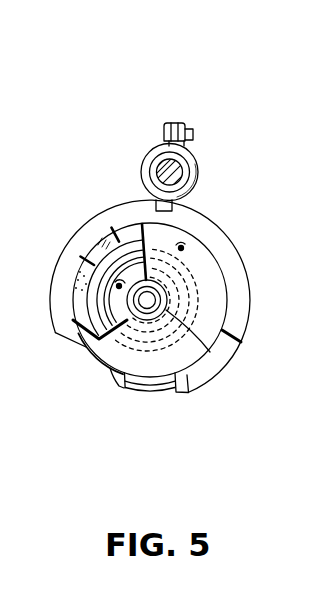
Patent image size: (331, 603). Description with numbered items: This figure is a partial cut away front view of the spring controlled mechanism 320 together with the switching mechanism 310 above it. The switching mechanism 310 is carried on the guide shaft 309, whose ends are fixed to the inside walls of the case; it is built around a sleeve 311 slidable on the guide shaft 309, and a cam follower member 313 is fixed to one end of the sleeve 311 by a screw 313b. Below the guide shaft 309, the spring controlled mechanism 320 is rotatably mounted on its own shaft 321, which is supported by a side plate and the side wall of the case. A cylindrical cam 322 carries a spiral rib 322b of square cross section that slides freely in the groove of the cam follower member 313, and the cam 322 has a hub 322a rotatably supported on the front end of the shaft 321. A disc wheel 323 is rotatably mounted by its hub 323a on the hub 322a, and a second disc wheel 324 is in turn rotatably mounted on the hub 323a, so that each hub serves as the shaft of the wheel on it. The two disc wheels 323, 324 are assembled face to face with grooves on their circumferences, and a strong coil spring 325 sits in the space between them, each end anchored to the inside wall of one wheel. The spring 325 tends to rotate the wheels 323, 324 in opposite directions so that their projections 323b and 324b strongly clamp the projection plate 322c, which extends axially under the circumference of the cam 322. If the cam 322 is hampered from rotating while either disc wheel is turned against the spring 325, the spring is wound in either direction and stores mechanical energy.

The guide shaft 309 is at (183, 177).
The switching mechanism 310 is at (151, 118).
The sleeve 311 is at (158, 160).
The cam follower member 313 is at (197, 162).
The screw 313b is at (184, 126).
The spring controlled mechanism 320 is at (89, 378).
The shaft 321 is at (146, 322).
The cylindrical cam 322 is at (97, 250).
The hub 322a is at (210, 352).
The spiral rib 322b is at (219, 240).
The projection plate 322c is at (149, 398).
The disc wheel 323 is at (80, 289).
The hub 323a is at (124, 301).
The projection 323b is at (188, 389).
The disc wheel 324 is at (214, 275).
The projection 324b is at (117, 395).
The coil spring 325 is at (90, 343).